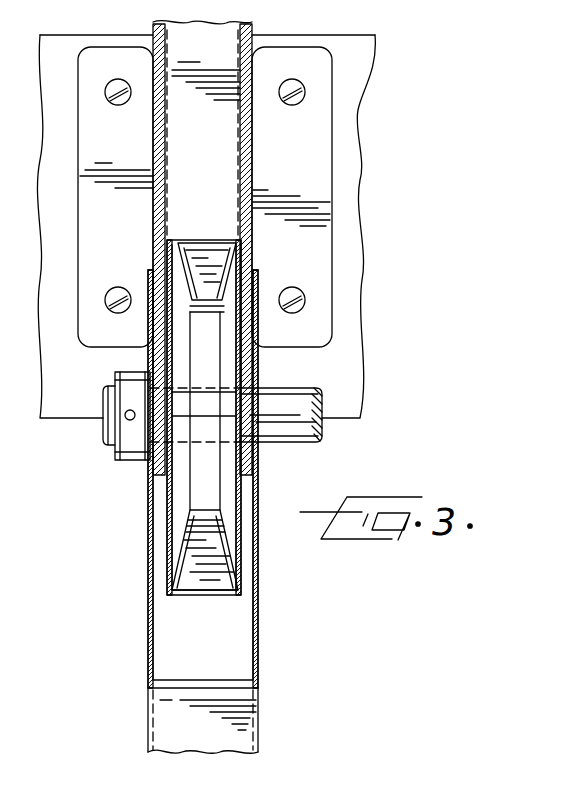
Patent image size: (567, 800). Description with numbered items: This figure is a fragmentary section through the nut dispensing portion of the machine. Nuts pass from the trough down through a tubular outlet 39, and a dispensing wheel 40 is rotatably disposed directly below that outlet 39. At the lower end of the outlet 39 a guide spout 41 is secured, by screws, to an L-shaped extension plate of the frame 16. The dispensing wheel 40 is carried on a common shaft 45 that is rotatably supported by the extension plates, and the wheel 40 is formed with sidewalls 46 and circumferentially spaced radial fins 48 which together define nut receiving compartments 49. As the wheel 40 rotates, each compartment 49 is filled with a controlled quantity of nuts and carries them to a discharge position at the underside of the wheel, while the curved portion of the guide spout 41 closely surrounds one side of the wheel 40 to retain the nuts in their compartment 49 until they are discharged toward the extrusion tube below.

The frame 16 is at (350, 150).
The tubular outlet 39 is at (190, 112).
The dispensing wheel 40 is at (167, 542).
The guide spout 41 is at (150, 618).
The common shaft 45 is at (288, 438).
The sidewall 46 is at (172, 277).
The radial fin 48 is at (203, 247).
The nut receiving compartment 49 is at (205, 338).